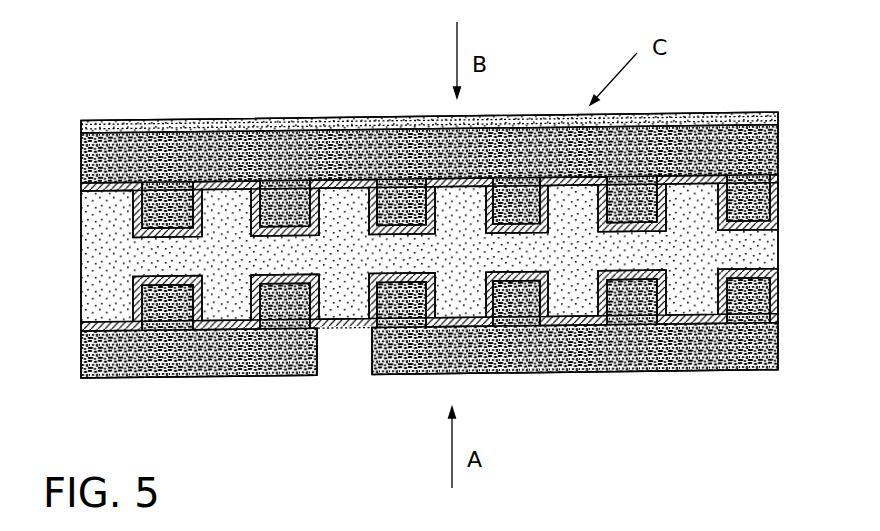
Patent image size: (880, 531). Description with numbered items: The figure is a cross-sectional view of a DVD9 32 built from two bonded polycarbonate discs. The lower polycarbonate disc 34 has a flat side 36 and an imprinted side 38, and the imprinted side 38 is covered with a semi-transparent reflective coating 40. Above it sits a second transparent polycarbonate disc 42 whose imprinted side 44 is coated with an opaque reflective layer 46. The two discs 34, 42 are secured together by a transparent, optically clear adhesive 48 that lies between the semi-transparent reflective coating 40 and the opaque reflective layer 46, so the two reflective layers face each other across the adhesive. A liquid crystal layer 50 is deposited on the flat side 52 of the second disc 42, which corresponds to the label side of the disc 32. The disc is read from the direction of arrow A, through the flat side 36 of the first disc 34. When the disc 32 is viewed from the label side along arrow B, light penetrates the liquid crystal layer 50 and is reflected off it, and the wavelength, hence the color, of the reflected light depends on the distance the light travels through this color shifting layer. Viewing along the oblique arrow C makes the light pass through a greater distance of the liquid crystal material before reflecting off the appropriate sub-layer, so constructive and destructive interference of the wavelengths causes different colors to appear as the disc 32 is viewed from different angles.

The DVD9 32 is at (612, 392).
The polycarbonate disc 34 is at (355, 370).
The flat side 36 is at (178, 378).
The imprinted side 38 is at (88, 322).
The semi-transparent reflective coating 40 is at (781, 290).
The second transparent polycarbonate disc 42 is at (415, 171).
The imprinted side 44 is at (83, 157).
The opaque reflective layer 46 is at (98, 193).
The transparent optically clear adhesive 48 is at (470, 264).
The liquid crystal layer 50 is at (155, 128).
The flat side 52 is at (385, 128).